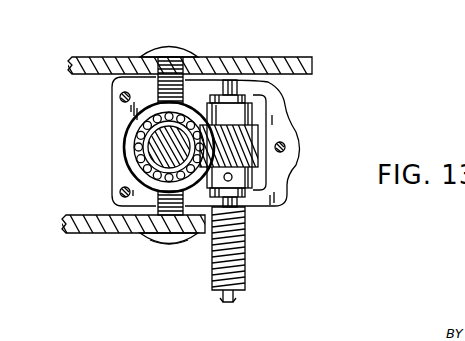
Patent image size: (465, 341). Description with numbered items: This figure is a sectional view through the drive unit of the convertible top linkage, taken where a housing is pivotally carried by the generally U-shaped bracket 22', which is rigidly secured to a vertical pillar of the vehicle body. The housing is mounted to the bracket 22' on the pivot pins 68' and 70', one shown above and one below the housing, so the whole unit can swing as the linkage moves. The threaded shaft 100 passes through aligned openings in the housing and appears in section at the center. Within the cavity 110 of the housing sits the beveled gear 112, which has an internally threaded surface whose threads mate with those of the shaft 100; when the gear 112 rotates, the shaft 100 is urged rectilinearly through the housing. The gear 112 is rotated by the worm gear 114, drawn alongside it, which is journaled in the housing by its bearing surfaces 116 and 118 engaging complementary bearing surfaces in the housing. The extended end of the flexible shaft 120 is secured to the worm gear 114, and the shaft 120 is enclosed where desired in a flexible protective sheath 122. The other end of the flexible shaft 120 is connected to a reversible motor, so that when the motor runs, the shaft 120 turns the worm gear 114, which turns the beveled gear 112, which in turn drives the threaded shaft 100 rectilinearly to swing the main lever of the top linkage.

The U-shaped bracket 22' is at (180, 148).
The pivot pin 70' is at (186, 117).
The pivot pin 68' is at (169, 264).
The beveled gear 112 is at (140, 135).
The threaded shaft 100 is at (153, 150).
The cavity 110 is at (137, 167).
The bearing surface 118 is at (246, 97).
The worm gear 114 is at (258, 160).
The bearing surface 116 is at (247, 200).
The flexible protective sheath 122 is at (245, 247).
The flexible shaft 120 is at (236, 293).